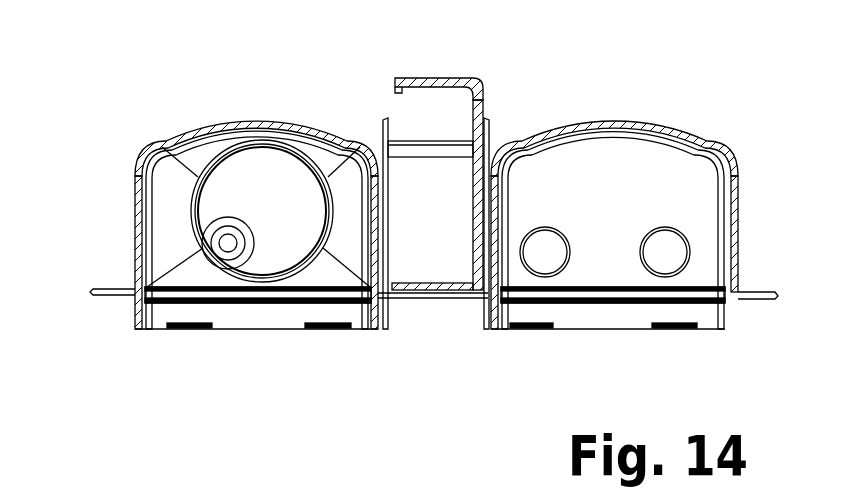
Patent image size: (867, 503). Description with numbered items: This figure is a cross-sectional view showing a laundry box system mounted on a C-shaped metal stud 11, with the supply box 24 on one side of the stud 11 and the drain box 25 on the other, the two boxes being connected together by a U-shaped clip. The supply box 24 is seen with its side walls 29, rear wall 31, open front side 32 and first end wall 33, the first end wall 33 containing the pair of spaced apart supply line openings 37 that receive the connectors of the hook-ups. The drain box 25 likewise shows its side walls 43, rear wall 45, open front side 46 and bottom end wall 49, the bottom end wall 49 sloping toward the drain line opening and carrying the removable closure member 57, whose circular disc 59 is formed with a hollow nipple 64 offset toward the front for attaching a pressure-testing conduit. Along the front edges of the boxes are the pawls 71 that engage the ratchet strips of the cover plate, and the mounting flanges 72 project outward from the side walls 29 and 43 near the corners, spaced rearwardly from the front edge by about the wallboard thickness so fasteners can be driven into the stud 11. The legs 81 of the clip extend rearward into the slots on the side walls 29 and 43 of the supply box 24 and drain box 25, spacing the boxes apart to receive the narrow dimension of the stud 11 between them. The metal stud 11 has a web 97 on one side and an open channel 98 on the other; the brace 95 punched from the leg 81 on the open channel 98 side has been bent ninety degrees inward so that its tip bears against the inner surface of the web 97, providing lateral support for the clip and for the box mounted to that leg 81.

The stud 11 is at (469, 151).
The supply box 24 is at (676, 219).
The drain box 25 is at (218, 229).
The side walls 29 is at (739, 177).
The rear wall 31 is at (638, 124).
The open front side 32 is at (702, 330).
The first end wall 33 is at (690, 172).
The supply line openings 37 is at (557, 228).
The side walls 43 is at (144, 221).
The rear wall 45 is at (205, 128).
The open front side 46 is at (161, 330).
The bottom end wall 49 is at (329, 270).
The closure member 57 is at (278, 141).
The circular disc 59 is at (262, 158).
The hollow nipple 64 is at (222, 231).
The pawls 71 is at (201, 330).
The mounting flanges 72 is at (90, 294).
The legs 81 is at (383, 122).
The brace 95 is at (458, 141).
The web 97 is at (471, 250).
The open channel 98 is at (398, 77).